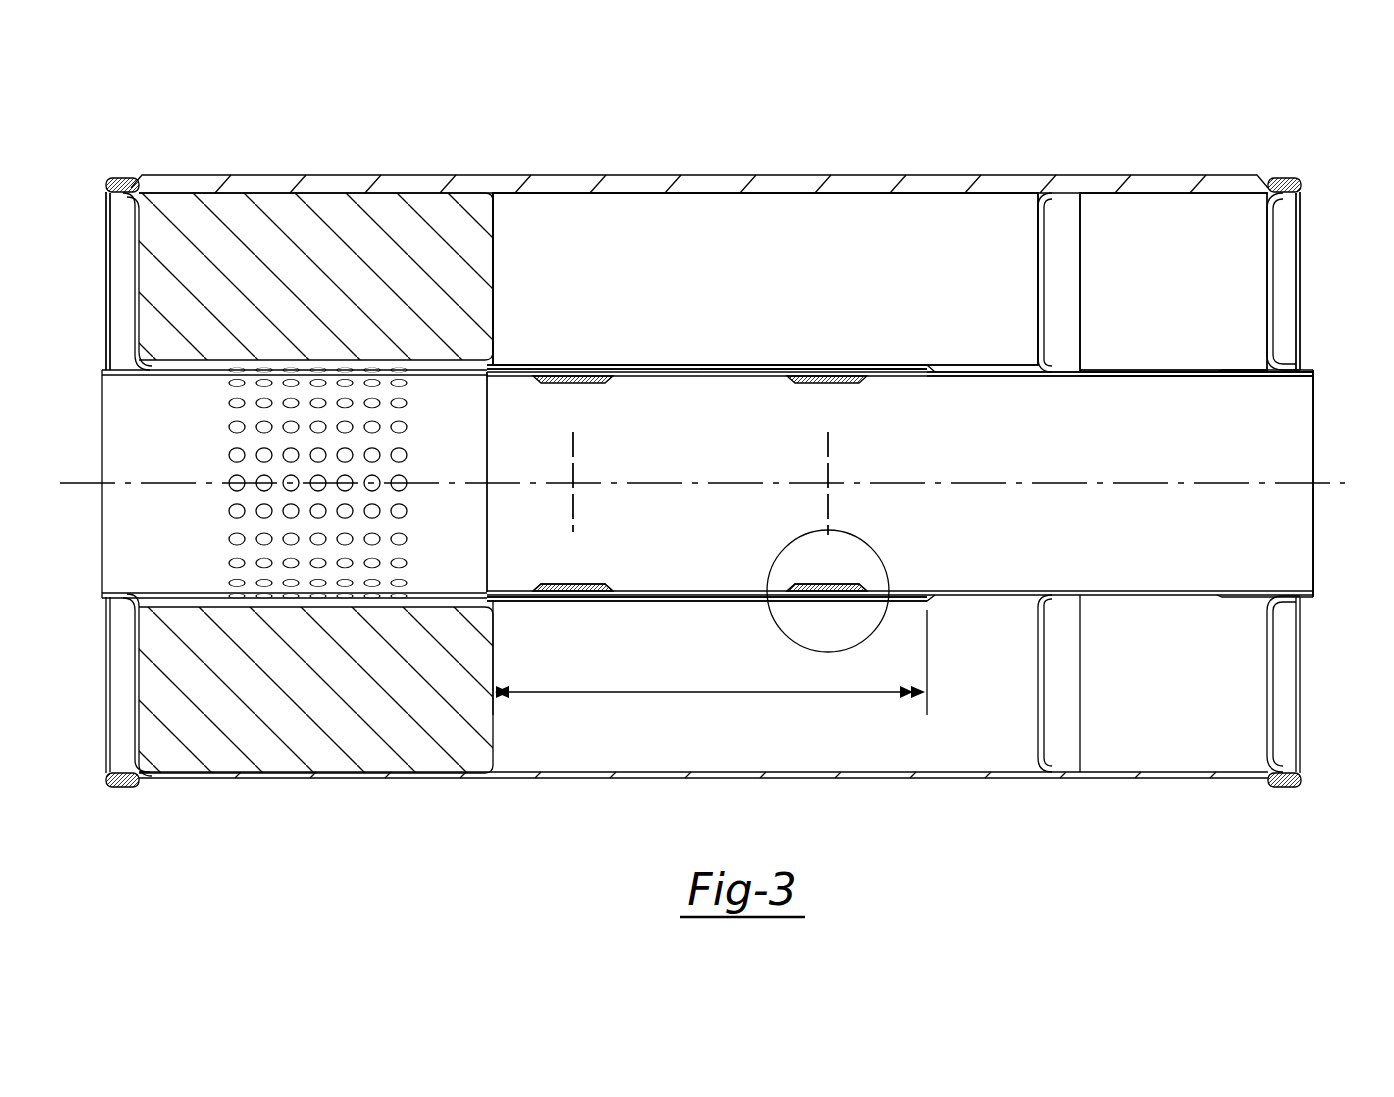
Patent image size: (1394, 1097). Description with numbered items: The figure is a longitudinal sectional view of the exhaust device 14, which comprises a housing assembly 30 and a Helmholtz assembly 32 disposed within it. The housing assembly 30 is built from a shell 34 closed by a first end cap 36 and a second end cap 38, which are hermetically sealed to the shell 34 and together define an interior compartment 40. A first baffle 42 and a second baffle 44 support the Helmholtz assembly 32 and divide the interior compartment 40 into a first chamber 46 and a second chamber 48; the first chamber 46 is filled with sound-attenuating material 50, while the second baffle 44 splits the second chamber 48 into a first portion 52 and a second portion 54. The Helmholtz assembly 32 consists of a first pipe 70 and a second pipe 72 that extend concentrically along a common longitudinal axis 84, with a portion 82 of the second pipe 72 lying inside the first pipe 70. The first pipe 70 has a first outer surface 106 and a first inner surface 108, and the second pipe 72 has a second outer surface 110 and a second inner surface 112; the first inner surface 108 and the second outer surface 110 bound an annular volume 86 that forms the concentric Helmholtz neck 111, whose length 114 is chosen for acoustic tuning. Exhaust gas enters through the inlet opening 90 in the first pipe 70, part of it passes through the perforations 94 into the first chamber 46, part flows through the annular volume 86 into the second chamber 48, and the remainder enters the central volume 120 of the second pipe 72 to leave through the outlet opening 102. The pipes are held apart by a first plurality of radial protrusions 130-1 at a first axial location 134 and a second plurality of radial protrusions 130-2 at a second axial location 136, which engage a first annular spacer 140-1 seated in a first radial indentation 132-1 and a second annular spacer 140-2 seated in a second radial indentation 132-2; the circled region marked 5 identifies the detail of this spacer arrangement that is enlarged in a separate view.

The exhaust device 14 is at (102, 137).
The housing assembly 30 is at (1192, 170).
The Helmholtz assembly 32 is at (885, 352).
The shell 34 is at (815, 191).
The first end cap 36 is at (137, 240).
The second end cap 38 is at (1270, 242).
The interior compartment 40 is at (511, 213).
The first baffle 42 is at (500, 235).
The second baffle 44 is at (1040, 235).
The first chamber 46 is at (354, 217).
The second chamber 48 is at (785, 220).
The sound-attenuating material 50 is at (310, 235).
The first portion 52 is at (995, 747).
The second portion 54 is at (1165, 747).
The first pipe 70 is at (138, 345).
The second pipe 72 is at (1160, 365).
The portion of the second pipe 82 is at (706, 365).
The longitudinal axis 84 is at (1326, 480).
The annular volume 86 is at (772, 365).
The inlet opening 90 is at (100, 402).
The perforations 94 is at (237, 455).
The outlet opening 102 is at (1300, 538).
The first outer surface 106 is at (510, 360).
The first inner surface 108 is at (440, 374).
The second outer surface 110 is at (1003, 360).
The Helmholtz neck 111 is at (718, 598).
The second inner surface 112 is at (985, 376).
The length 114 is at (690, 694).
The central volume 120 is at (645, 410).
The first plurality of radial protrusions 130-1 is at (568, 598).
The second plurality of radial protrusions 130-2 is at (820, 598).
The first radial indentation 132-1 is at (609, 482).
The second radial indentation 132-2 is at (864, 483).
The first axial location 134 is at (573, 500).
The second axial location 136 is at (825, 460).
The first annular spacer 140-1 is at (580, 372).
The second annular spacer 140-2 is at (830, 372).
The detail view of FIG. 5 is at (863, 540).